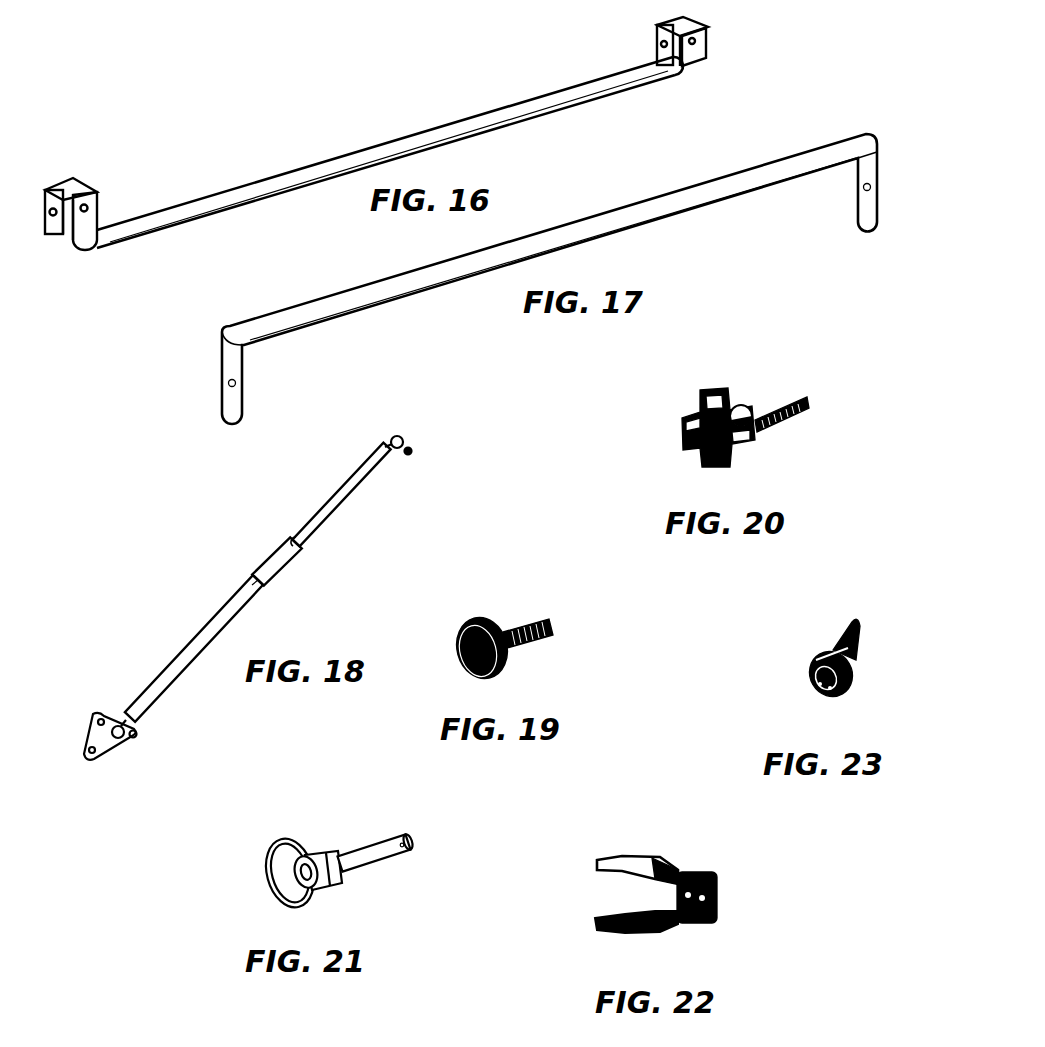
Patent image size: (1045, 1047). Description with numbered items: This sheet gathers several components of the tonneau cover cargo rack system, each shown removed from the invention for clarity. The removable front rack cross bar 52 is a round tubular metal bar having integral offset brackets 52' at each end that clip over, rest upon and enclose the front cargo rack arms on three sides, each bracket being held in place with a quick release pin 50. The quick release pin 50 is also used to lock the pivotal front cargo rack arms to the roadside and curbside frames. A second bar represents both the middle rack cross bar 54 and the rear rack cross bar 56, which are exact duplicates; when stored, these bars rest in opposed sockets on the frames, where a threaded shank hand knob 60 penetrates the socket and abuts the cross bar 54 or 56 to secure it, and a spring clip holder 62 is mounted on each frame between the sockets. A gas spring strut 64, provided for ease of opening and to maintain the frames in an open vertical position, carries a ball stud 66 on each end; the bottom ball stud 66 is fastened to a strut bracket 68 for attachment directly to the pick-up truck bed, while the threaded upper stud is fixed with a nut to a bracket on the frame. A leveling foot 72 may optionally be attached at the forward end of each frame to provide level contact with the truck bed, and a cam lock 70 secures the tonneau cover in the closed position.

In FIG. 16, the front rack cross bar 52 is at (390, 152).
In FIG. 16, the integral offset brackets 52' is at (431, 167).
In FIG. 17, the middle rack cross bar 54 is at (672, 193).
In FIG. 17, the rear rack cross bar 56 is at (550, 272).
In FIG. 18, the gas spring strut 64 is at (248, 582).
In FIG. 18, the ball stud 66 is at (406, 437).
In FIG. 18, the strut bracket 68 is at (86, 762).
In FIG. 19, the leveling foot 72 is at (470, 620).
In FIG. 20, the threaded shank hand knob 60 is at (743, 404).
In FIG. 21, the quick release pin 50 is at (363, 845).
In FIG. 22, the spring clip holder 62 is at (718, 902).
In FIG. 23, the cam lock 70 is at (849, 620).